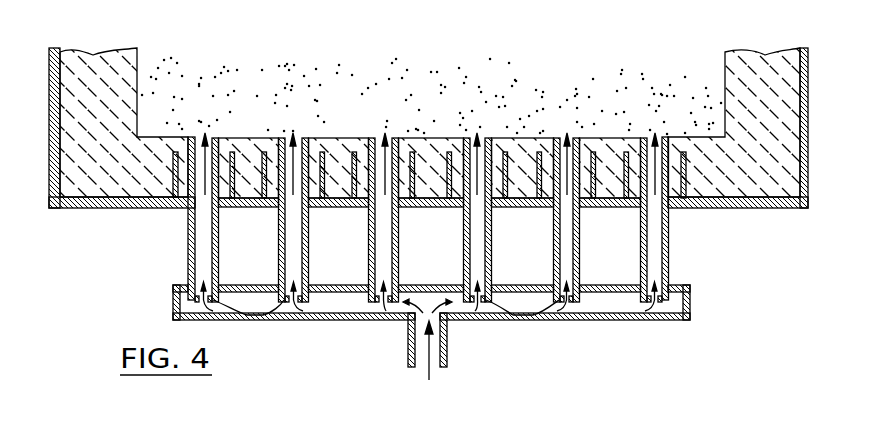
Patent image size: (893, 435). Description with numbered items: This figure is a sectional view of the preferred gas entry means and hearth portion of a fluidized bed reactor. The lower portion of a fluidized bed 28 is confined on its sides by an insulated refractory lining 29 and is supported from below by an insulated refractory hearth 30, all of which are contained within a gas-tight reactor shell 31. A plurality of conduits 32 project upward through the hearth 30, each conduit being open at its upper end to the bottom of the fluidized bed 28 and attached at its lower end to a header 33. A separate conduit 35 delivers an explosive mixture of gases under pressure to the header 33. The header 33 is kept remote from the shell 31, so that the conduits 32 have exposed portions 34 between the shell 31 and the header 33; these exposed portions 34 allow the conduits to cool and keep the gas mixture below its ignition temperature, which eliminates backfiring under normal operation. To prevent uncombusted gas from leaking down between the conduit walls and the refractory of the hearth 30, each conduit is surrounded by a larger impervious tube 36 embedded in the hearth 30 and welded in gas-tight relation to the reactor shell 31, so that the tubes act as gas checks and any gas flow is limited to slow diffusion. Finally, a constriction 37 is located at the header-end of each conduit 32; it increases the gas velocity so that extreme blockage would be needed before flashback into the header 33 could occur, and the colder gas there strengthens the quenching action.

The fluidized bed 28 is at (477, 77).
The insulated refractory lining 29 is at (727, 60).
The insulated refractory hearth 30 is at (328, 140).
The gas-tight reactor shell 31 is at (748, 210).
The conduits 32 is at (355, 182).
The header 33 is at (343, 321).
The exposed portions 34 is at (370, 257).
The conduit 35 is at (447, 346).
The impervious tubes 36 is at (262, 182).
The constriction 37 is at (262, 317).